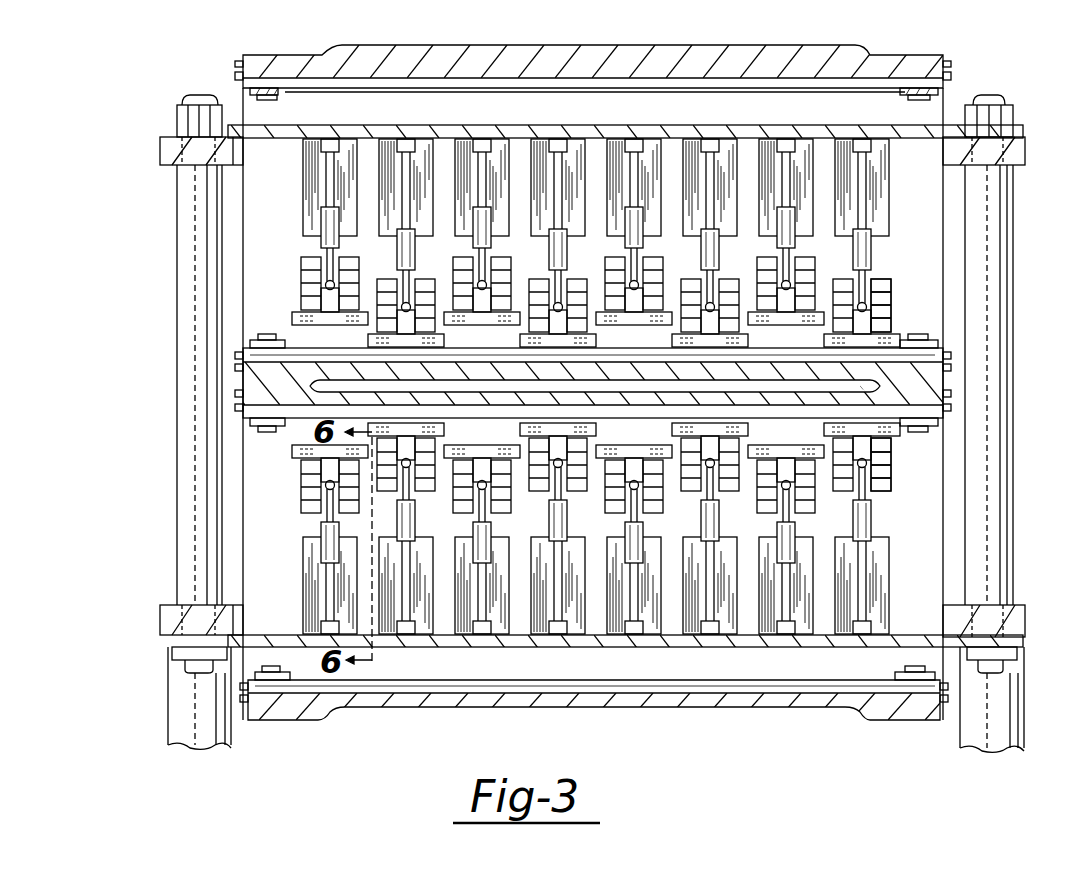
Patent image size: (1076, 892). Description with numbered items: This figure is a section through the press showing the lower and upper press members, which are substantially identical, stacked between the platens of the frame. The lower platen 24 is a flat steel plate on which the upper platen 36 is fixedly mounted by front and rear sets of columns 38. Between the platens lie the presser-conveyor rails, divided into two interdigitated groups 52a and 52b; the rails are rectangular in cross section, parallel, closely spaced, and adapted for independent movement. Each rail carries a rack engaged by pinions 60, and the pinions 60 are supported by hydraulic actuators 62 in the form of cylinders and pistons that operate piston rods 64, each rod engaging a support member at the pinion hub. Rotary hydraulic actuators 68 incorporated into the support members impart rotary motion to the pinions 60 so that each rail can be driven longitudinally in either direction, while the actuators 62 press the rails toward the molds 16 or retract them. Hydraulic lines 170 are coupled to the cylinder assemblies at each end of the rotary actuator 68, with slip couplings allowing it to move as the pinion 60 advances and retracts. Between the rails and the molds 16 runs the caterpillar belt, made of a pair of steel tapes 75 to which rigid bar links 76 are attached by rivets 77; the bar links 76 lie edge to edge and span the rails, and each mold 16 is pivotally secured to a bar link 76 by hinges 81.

The mold 16 is at (850, 58).
The lower platen 24 is at (163, 620).
The upper platen 36 is at (162, 150).
The columns 38 is at (177, 218).
The presser-conveyor rails 52a is at (897, 347).
The presser-conveyor rails 52b is at (599, 444).
The pinions 60 is at (890, 288).
The hydraulic actuators 62 is at (887, 212).
The piston rods 64 is at (871, 268).
The rotary hydraulic actuators 68 is at (892, 300).
The steel tapes 75 is at (300, 92).
The bar links 76 is at (843, 88).
The rivets 77 is at (272, 100).
The hinges 81 is at (238, 70).
The hydraulic lines 170 is at (870, 229).